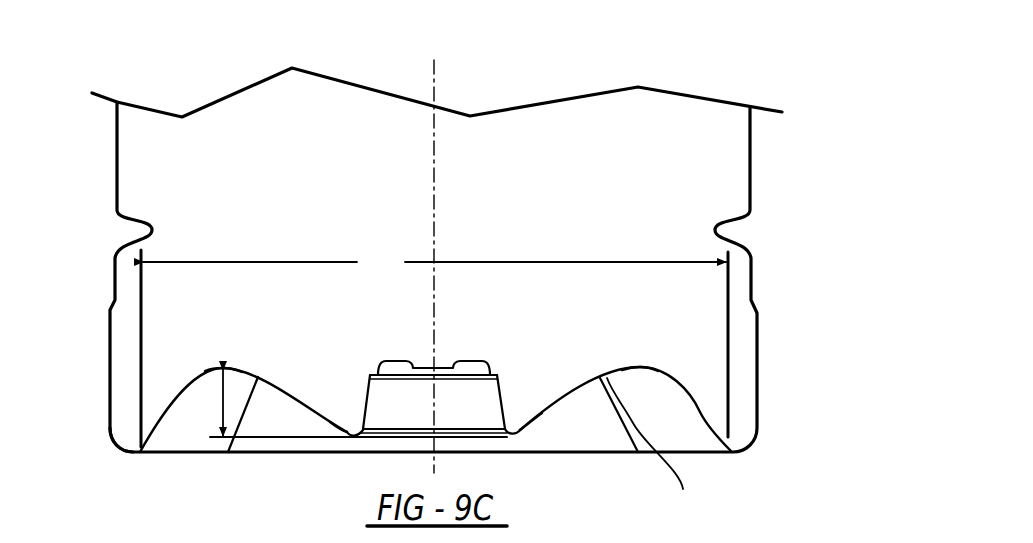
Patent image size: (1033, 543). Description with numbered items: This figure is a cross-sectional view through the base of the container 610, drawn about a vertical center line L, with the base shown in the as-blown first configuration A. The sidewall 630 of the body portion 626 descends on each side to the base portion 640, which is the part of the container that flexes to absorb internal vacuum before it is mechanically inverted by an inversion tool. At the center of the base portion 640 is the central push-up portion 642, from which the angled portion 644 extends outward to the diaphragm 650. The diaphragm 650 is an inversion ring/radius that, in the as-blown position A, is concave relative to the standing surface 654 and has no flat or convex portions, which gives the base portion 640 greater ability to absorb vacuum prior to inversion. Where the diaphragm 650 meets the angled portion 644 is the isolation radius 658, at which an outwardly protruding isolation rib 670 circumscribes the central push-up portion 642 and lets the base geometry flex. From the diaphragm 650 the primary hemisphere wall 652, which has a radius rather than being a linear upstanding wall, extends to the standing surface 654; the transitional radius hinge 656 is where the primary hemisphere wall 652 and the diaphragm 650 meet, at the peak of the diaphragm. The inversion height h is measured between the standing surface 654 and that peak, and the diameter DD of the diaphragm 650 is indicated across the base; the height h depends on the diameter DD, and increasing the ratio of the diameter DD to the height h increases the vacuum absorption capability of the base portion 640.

The container 610 is at (446, 252).
The body portion 626 is at (750, 158).
The sidewall 630 is at (117, 145).
The base portion 640 is at (233, 463).
The central push-up portion 642 is at (468, 358).
The angled portion 644 is at (504, 406).
The diaphragm 650 is at (283, 385).
The primary hemisphere wall 652 is at (164, 414).
The standing surface 654 is at (137, 453).
The transitional radius hinge 656 is at (227, 367).
The isolation radius 658 is at (347, 431).
The isolation rib 670 is at (357, 437).
The longitudinal axis L is at (434, 85).
The diameter of the diaphragm DD is at (434, 264).
The inversion height h is at (215, 403).
The as-blown first configuration A is at (649, 445).